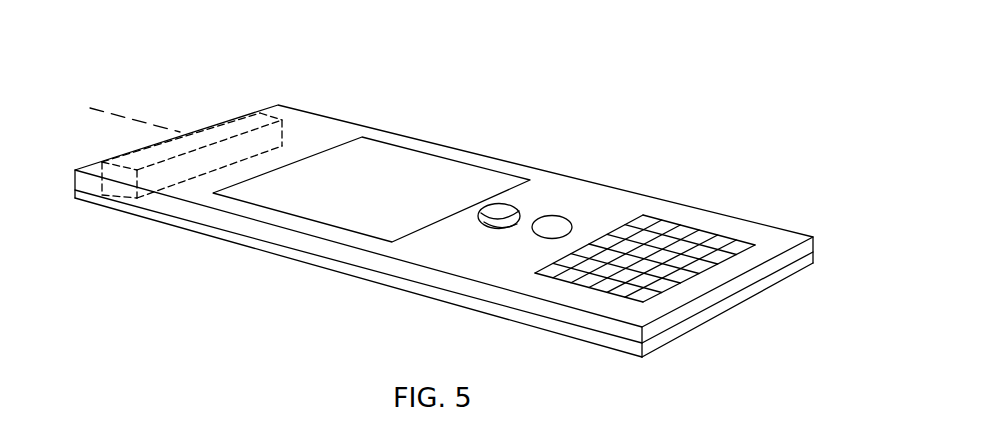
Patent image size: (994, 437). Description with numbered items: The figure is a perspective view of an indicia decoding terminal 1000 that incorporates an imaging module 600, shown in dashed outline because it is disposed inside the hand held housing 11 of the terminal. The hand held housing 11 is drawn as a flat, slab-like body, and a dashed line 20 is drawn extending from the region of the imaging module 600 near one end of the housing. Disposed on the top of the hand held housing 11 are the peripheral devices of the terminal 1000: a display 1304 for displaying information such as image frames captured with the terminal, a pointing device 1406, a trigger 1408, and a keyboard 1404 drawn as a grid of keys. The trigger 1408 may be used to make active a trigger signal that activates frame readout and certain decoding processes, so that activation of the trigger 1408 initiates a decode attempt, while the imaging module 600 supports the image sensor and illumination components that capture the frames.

The hand held housing 11 is at (783, 237).
The axis line 20 is at (121, 117).
The imaging module 600 is at (235, 125).
The indicia decoding terminal 1000 is at (372, 69).
The display 1304 is at (452, 158).
The keyboard 1404 is at (690, 226).
The pointing device 1406 is at (519, 203).
The trigger 1408 is at (572, 223).